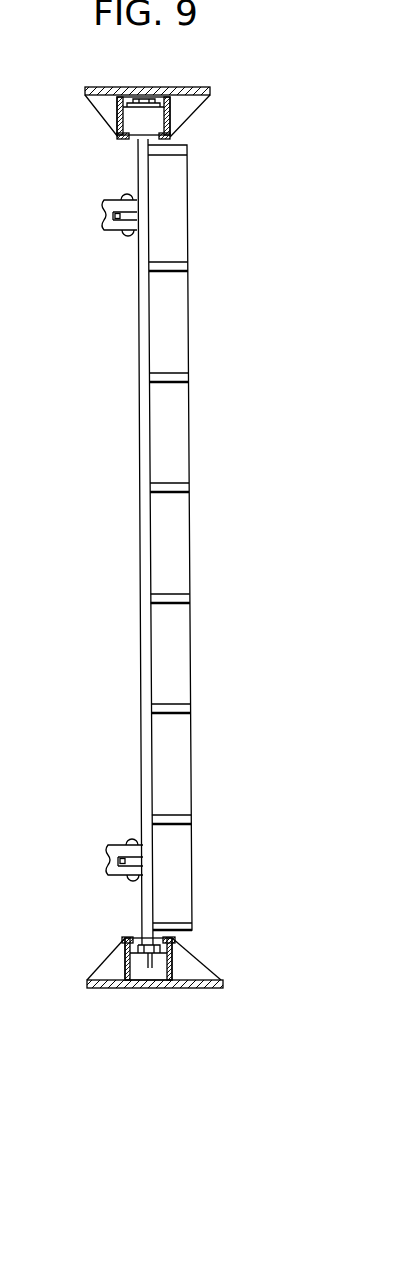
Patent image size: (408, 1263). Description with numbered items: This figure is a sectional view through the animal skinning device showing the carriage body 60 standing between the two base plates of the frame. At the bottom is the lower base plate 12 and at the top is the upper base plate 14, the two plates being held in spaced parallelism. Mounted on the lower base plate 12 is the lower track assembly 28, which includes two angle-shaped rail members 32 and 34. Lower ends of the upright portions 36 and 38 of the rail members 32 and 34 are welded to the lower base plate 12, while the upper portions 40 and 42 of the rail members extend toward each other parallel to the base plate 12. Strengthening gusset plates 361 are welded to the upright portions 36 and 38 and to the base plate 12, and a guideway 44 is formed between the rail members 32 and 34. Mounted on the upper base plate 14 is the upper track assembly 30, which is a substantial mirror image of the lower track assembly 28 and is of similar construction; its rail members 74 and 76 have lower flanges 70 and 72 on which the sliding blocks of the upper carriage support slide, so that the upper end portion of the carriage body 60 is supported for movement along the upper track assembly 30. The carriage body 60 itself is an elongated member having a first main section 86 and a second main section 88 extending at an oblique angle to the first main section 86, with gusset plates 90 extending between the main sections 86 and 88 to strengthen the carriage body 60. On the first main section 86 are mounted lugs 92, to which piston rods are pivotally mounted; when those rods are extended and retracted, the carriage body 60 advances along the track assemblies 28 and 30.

The lower base plate 12 is at (192, 989).
The upper base plate 14 is at (177, 93).
The lower track assembly 28 is at (102, 958).
The upper track assembly 30 is at (187, 119).
The rail member 32 is at (178, 956).
The rail member 34 is at (116, 970).
The upright portion 36 is at (132, 968).
The strengthening gusset plate 361 is at (193, 972).
The upright portion 38 is at (152, 968).
The upper portion 40 is at (168, 937).
The upper portion 42 is at (131, 937).
The guideway 44 is at (148, 968).
The carriage body 60 is at (196, 537).
The lower flange 70 is at (162, 140).
The lower flange 72 is at (125, 139).
The rail member 74 is at (182, 108).
The rail member 76 is at (116, 112).
The first main section 86 is at (146, 548).
The second main section 88 is at (167, 455).
The gusset plate 90 is at (163, 596).
The lug 92 is at (132, 843).